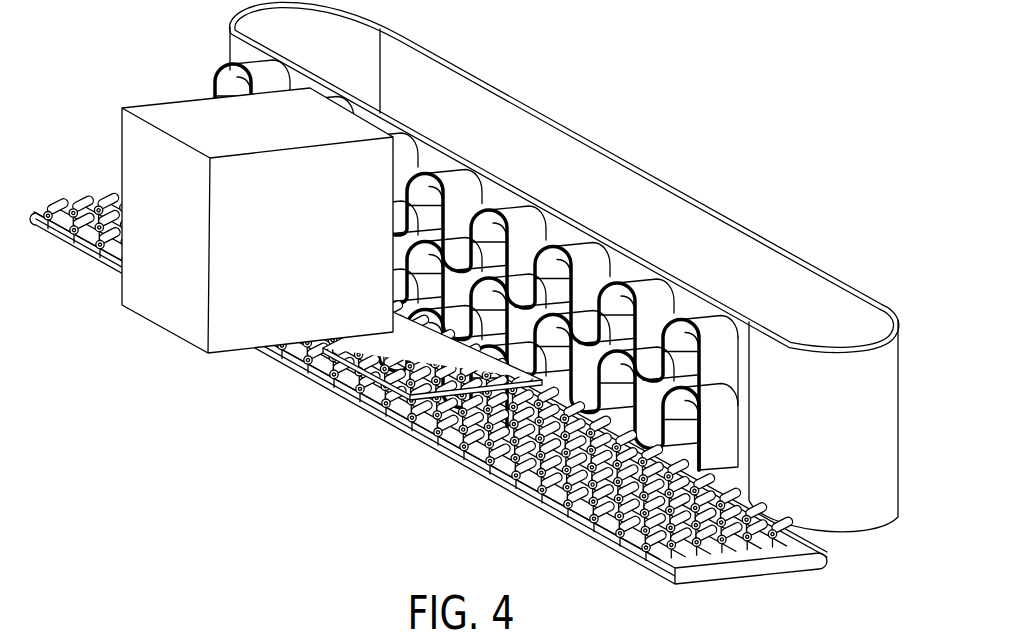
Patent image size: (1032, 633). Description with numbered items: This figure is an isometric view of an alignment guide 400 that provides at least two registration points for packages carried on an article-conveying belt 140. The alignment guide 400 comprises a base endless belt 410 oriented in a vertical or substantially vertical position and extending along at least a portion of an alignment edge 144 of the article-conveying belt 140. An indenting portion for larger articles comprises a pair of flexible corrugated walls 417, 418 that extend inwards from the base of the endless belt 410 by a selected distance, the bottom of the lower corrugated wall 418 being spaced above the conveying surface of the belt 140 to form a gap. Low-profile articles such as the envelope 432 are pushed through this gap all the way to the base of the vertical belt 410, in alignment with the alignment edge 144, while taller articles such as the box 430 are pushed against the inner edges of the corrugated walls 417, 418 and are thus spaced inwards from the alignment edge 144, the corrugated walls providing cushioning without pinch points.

The alignment guide 400 is at (556, 266).
The base endless belt 410 is at (687, 310).
The corrugated wall 417 is at (560, 277).
The lower corrugated wall 418 is at (717, 443).
The box 430 is at (267, 268).
The envelope 432 is at (428, 368).
The article-conveying belt 140 is at (557, 517).
The alignment edge 144 is at (832, 549).